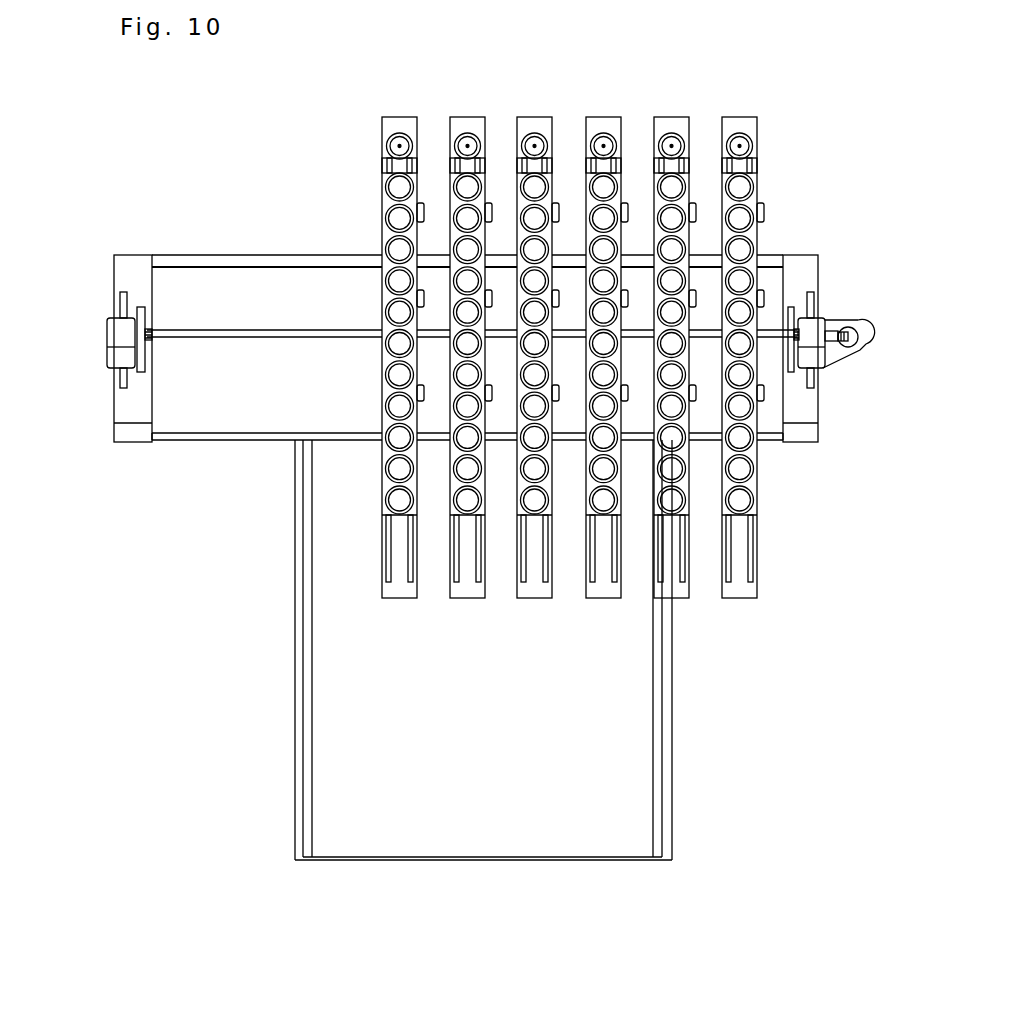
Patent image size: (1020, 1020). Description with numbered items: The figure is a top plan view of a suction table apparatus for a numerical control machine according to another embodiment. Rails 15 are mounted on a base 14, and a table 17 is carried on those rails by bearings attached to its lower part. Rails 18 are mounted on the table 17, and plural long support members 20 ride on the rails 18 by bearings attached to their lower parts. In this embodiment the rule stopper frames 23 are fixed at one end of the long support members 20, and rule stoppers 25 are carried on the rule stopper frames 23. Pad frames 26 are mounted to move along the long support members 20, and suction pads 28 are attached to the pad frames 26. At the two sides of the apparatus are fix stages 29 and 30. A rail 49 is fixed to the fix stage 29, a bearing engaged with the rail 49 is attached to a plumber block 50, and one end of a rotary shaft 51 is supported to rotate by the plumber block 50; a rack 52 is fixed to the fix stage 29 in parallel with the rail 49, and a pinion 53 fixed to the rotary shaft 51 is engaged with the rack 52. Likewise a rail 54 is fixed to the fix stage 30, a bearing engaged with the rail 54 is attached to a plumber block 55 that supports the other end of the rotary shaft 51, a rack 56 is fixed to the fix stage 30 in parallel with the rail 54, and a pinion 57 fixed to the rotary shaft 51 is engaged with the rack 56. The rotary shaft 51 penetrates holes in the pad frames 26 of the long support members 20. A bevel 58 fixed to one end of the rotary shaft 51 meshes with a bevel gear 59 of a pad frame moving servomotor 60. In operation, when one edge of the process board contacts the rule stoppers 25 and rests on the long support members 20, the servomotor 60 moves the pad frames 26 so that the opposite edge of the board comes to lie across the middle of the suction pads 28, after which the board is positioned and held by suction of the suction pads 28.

The base 14 is at (453, 833).
The rails 15 is at (303, 755).
The table 17 is at (135, 440).
The rails 18 is at (234, 262).
The long support members 20 is at (528, 353).
The rule stopper frames 23 is at (532, 125).
The rule stoppers 25 is at (723, 137).
The pad frames 26 is at (518, 520).
The suction pads 28 is at (387, 405).
The fix stage 29 is at (805, 410).
The fix stage 30 is at (122, 270).
The rail 49 is at (810, 295).
The plumber block 50 is at (818, 317).
The rotary shaft 51 is at (309, 330).
The rack 52 is at (806, 222).
The pinion 53 is at (808, 284).
The rail 54 is at (121, 304).
The plumber block 55 is at (118, 338).
The rack 56 is at (143, 318).
The pinion 57 is at (150, 338).
The bevel 58 is at (839, 345).
The bevel gear 59 is at (861, 347).
The pad frame moving servomotor 60 is at (866, 327).